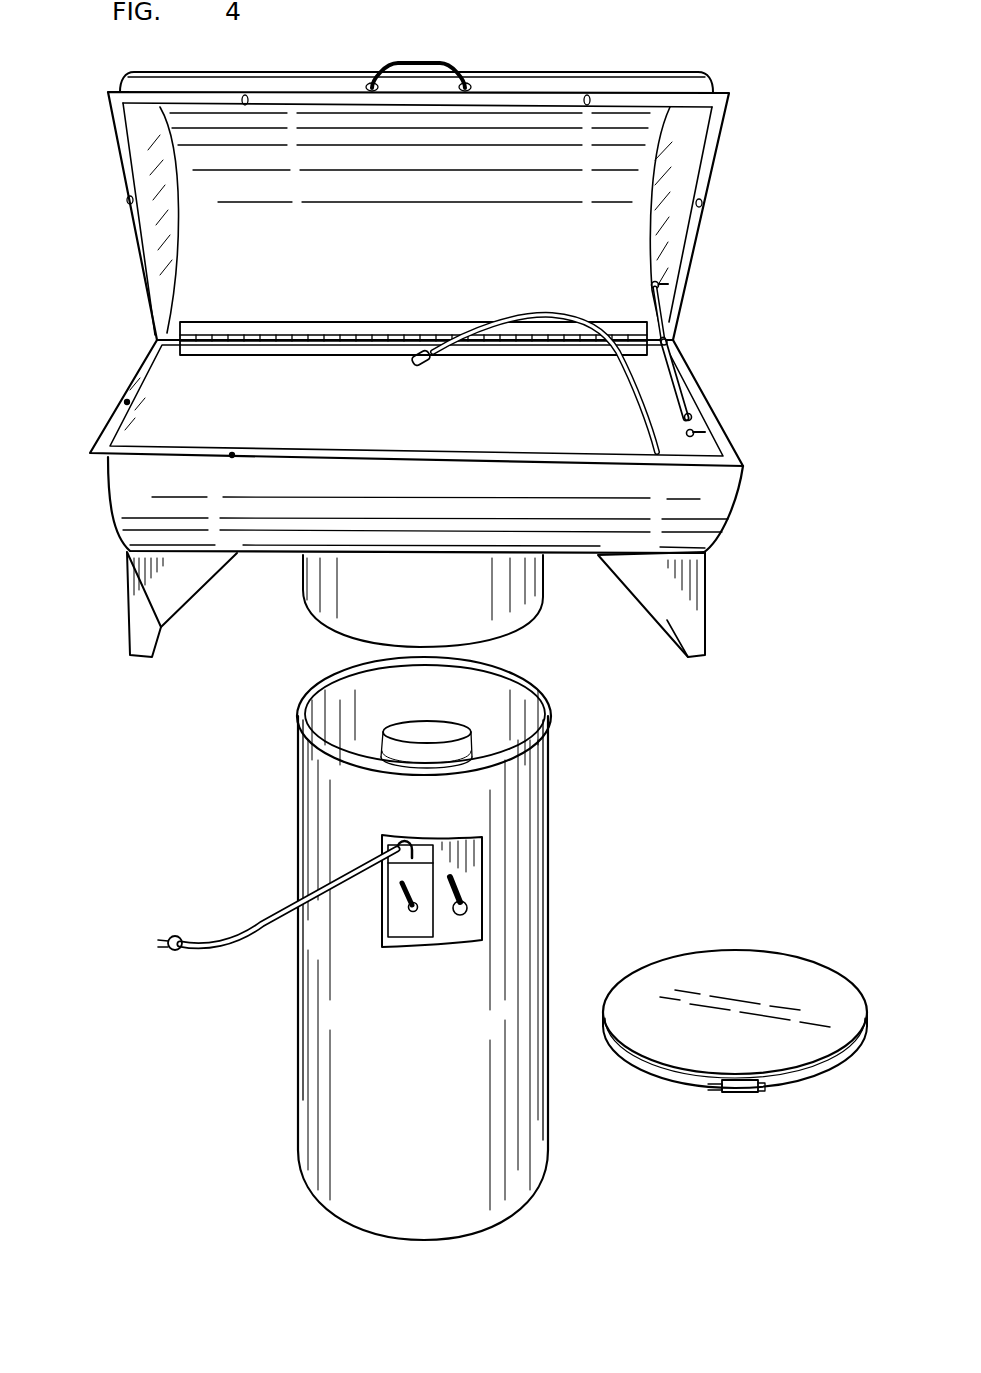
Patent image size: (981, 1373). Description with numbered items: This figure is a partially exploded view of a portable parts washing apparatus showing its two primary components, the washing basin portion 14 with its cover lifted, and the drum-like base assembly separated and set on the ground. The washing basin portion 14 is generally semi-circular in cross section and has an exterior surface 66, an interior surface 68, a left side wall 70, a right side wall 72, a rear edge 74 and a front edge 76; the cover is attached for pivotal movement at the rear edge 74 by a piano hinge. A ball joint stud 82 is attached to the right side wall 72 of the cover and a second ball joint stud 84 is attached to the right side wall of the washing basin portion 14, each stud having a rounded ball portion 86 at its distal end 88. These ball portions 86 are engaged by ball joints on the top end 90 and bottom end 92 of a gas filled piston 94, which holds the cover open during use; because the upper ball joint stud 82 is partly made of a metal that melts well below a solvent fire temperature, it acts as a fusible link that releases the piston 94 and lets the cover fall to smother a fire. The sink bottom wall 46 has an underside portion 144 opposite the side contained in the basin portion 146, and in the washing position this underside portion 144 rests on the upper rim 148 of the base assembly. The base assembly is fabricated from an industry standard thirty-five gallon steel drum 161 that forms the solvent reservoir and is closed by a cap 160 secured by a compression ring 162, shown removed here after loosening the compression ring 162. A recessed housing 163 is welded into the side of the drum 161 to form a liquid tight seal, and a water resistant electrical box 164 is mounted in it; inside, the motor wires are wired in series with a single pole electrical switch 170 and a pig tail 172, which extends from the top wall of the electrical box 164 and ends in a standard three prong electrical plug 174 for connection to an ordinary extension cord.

The washing basin portion 14 is at (138, 360).
The sink bottom wall 46 is at (363, 603).
The exterior surface 66 is at (133, 475).
The interior surface 68 is at (190, 386).
The left side wall 70 is at (137, 418).
The right side wall 72 is at (708, 435).
The rear edge 74 is at (305, 360).
The front edge 76 is at (231, 457).
The ball joint stud 82 is at (655, 285).
The second ball joint stud 84 is at (685, 416).
The rounded ball portion 86 is at (655, 285).
The distal end 88 is at (655, 286).
The top end 90 is at (668, 325).
The bottom end 92 is at (690, 395).
The gas filled piston 94 is at (672, 345).
The underside portion 144 is at (276, 560).
The basin portion 146 is at (512, 428).
The upper rim 148 is at (305, 705).
The cap 160 is at (685, 1058).
The steel drum 161 is at (522, 890).
The compression ring 162 is at (690, 1080).
The recessed housing 163 is at (466, 912).
The electrical box 164 is at (400, 930).
The single pole electrical switch 170 is at (403, 920).
The pig tail 172 is at (263, 920).
The three prong electrical plug 174 is at (175, 935).